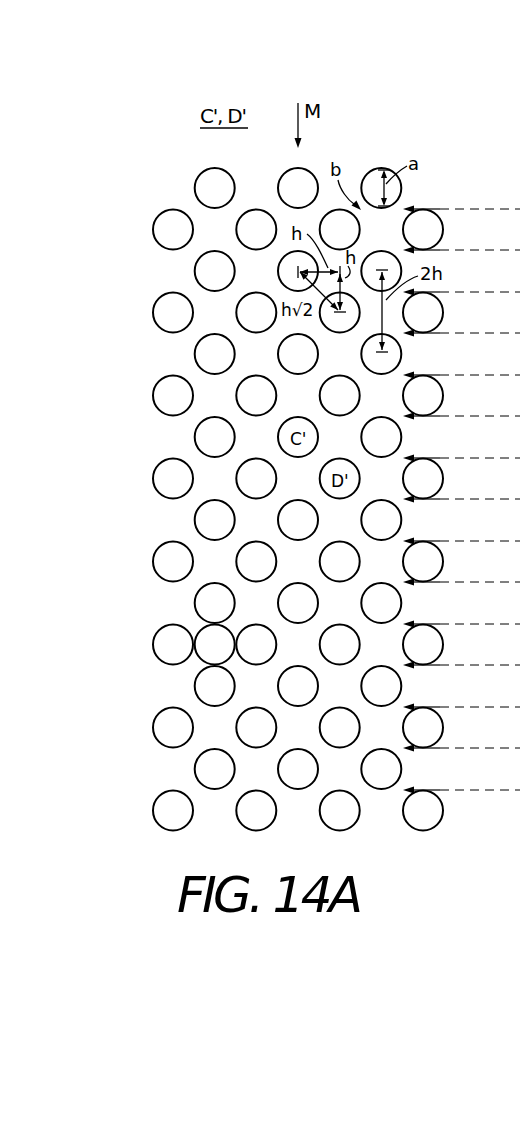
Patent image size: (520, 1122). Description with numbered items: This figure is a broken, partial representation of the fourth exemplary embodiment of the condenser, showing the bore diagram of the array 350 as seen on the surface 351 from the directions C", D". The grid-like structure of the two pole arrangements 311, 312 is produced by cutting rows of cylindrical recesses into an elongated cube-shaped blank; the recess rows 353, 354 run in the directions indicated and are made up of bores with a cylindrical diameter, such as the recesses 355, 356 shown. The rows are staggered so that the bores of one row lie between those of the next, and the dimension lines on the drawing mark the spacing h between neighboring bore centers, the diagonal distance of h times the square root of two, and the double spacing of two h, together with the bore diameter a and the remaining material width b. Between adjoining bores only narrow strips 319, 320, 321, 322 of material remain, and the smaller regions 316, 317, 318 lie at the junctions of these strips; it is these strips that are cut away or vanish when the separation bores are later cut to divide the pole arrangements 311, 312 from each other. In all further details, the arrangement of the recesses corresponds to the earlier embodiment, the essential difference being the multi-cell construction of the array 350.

The nozzle array 350 is at (415, 142).
The recess row 354 is at (179, 173).
The recess 356 is at (235, 173).
The recess row 353 is at (134, 253).
The recess 355 is at (168, 245).
The surface 351 is at (145, 398).
The strip 320 is at (232, 616).
The dot region 316 is at (160, 592).
The strip 319 is at (193, 621).
The dot center 318 is at (212, 643).
The strip 321 is at (193, 664).
The dot 317 is at (171, 701).
The strip 322 is at (238, 665).
The pole arrangement 311 is at (439, 816).
The pole arrangement 312 is at (384, 805).